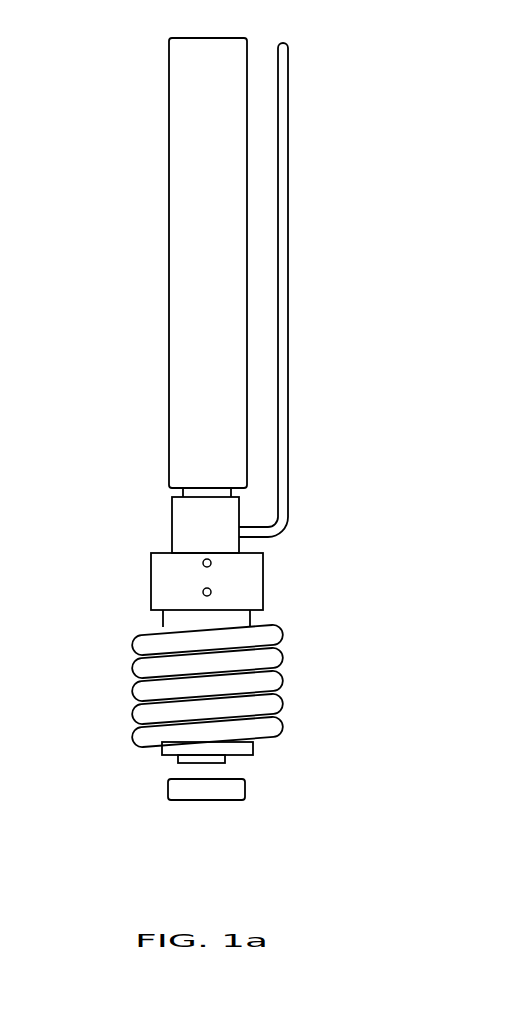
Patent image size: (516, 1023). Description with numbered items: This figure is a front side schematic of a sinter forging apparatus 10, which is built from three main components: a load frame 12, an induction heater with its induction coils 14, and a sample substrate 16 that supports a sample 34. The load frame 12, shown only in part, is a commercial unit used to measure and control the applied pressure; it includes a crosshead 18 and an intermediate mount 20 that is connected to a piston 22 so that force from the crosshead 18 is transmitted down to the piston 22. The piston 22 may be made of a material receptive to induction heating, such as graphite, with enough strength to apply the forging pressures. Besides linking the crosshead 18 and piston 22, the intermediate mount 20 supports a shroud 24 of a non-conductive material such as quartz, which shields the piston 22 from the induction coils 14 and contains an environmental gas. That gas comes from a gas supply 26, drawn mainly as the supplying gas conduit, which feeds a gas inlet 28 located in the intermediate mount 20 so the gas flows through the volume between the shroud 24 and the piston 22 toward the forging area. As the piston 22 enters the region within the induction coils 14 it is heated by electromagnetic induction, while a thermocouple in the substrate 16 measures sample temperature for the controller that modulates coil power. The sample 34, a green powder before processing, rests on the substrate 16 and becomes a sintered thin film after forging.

The apparatus 10 is at (237, 412).
The load frame 12 is at (132, 295).
The induction coils 14 is at (288, 675).
The sample substrate 16 is at (250, 790).
The crosshead 18 is at (185, 248).
The intermediate mount 20 is at (163, 528).
The piston 22 is at (222, 758).
The shroud 24 is at (175, 615).
The gas supply 26 is at (285, 365).
The gas inlet 28 is at (245, 525).
The sample 34 is at (195, 777).